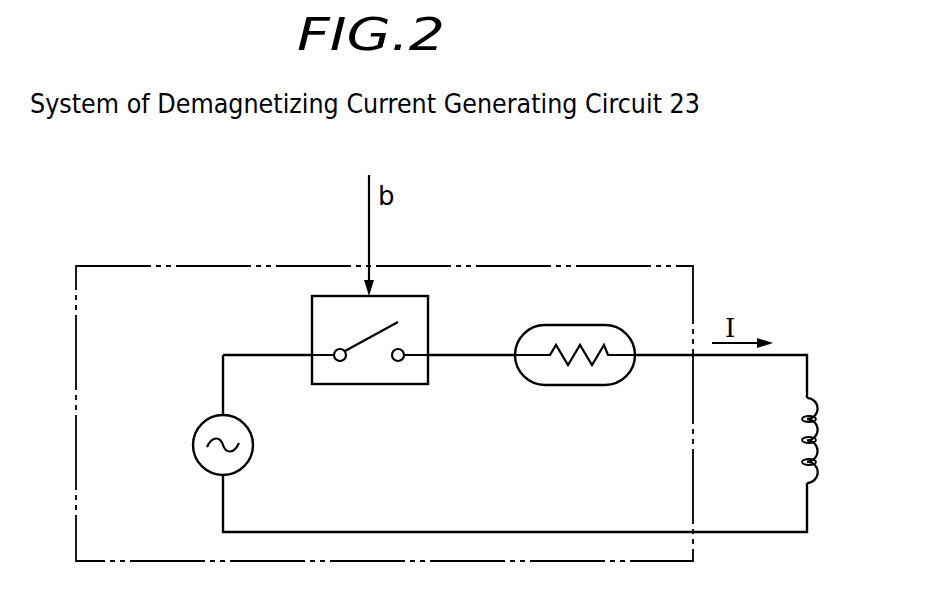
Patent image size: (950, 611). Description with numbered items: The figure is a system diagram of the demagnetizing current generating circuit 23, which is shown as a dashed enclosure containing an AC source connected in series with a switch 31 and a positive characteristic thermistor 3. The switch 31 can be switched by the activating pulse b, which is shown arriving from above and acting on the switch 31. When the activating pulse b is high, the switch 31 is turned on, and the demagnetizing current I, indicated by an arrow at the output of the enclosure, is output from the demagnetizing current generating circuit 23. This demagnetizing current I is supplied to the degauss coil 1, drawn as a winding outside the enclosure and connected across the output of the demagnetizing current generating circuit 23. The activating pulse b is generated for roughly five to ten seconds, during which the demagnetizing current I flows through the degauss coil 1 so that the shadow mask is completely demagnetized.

The demagnetizing current generating circuit 23 is at (637, 263).
The switch 31 is at (350, 386).
The positive characteristic thermistor 3 is at (566, 386).
The degauss coil 1 is at (821, 441).